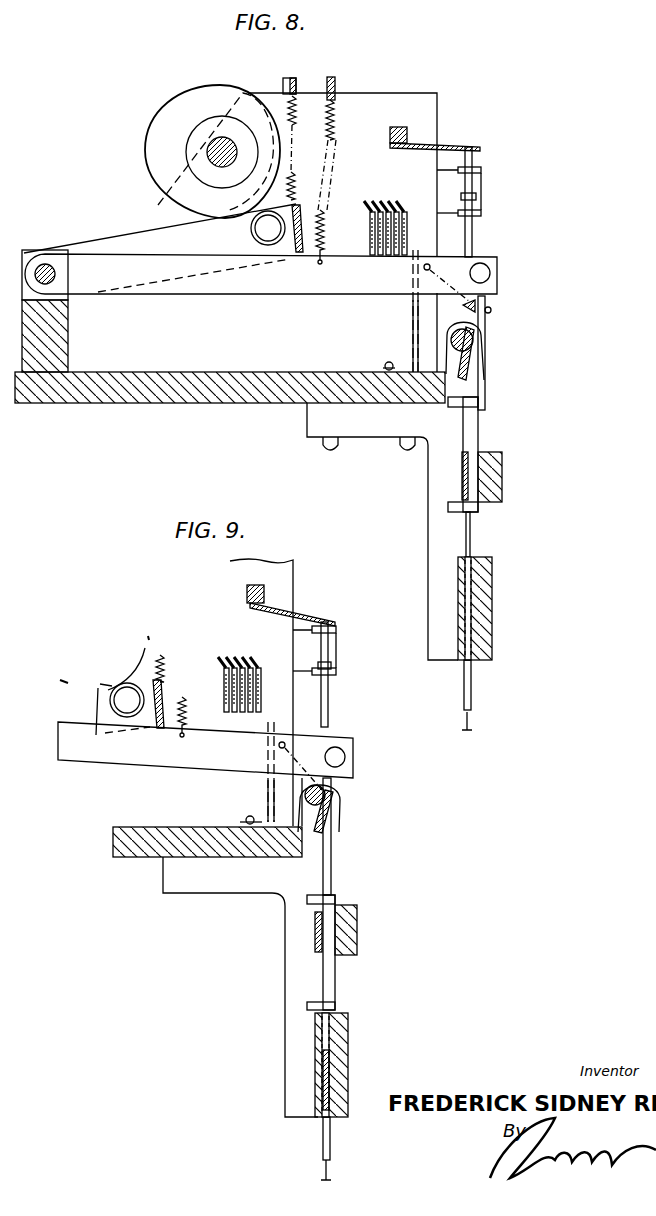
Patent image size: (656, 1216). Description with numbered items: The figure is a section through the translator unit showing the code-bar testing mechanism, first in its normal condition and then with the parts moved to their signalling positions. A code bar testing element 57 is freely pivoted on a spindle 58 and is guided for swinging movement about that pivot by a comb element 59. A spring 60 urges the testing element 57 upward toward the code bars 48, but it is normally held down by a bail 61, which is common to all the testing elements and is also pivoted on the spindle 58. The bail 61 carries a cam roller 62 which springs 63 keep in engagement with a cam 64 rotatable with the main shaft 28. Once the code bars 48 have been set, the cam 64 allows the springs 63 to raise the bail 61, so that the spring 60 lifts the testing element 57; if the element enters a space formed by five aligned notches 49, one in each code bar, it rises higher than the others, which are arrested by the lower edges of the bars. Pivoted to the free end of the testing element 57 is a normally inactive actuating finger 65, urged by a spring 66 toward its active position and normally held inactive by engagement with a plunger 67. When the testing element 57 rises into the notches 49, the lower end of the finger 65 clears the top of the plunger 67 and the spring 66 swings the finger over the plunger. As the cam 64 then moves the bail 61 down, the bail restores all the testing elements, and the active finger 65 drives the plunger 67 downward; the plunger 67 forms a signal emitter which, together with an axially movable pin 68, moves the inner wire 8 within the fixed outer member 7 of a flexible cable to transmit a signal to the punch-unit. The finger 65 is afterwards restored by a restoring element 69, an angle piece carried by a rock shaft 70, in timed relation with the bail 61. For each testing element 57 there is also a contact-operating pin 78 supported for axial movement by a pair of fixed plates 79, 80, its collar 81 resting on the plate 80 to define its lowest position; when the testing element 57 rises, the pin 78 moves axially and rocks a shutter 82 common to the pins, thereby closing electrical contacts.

In FIG. 8, the outer member 7 is at (473, 697).
In FIG. 9, the outer member 7 is at (332, 1139).
In FIG. 8, the inner wire 8 is at (472, 614).
In FIG. 9, the inner wire 8 is at (330, 1084).
In FIG. 8, the main shaft 28 is at (207, 151).
In FIG. 8, the code bars 48 is at (370, 232).
In FIG. 8, the notches 49 is at (382, 258).
In FIG. 8, the code bar testing element 57 is at (232, 290).
In FIG. 9, the code bar testing element 57 is at (90, 753).
In FIG. 8, the spindle 58 is at (46, 262).
In FIG. 8, the comb element 59 is at (413, 322).
In FIG. 9, the comb element 59 is at (268, 794).
In FIG. 8, the spring 60 is at (334, 125).
In FIG. 9, the spring 60 is at (188, 708).
In FIG. 8, the bail 61 is at (296, 258).
In FIG. 9, the bail 61 is at (158, 732).
In FIG. 8, the cam roller 62 is at (252, 231).
In FIG. 9, the cam roller 62 is at (110, 702).
In FIG. 8, the spring 63 is at (288, 112).
In FIG. 9, the spring 63 is at (165, 662).
In FIG. 8, the cam 64 is at (168, 118).
In FIG. 9, the cam 64 is at (141, 648).
In FIG. 8, the actuating finger 65 is at (486, 400).
In FIG. 9, the actuating finger 65 is at (332, 881).
In FIG. 8, the spring 66 is at (492, 311).
In FIG. 9, the spring 66 is at (347, 758).
In FIG. 8, the plunger 67 is at (480, 436).
In FIG. 9, the plunger 67 is at (336, 992).
In FIG. 8, the axially movable pin 68 is at (472, 544).
In FIG. 9, the axially movable pin 68 is at (330, 1034).
In FIG. 8, the restoring element 69 is at (468, 376).
In FIG. 9, the restoring element 69 is at (336, 832).
In FIG. 8, the rock shaft 70 is at (474, 340).
In FIG. 9, the rock shaft 70 is at (330, 798).
In FIG. 8, the contact-operating pin 78 is at (474, 245).
In FIG. 9, the contact-operating pin 78 is at (329, 720).
In FIG. 8, the fixed plate 79 is at (483, 170).
In FIG. 9, the fixed plate 79 is at (337, 630).
In FIG. 8, the fixed plate 80 is at (483, 213).
In FIG. 9, the fixed plate 80 is at (337, 675).
In FIG. 8, the collar 81 is at (478, 197).
In FIG. 9, the collar 81 is at (332, 666).
In FIG. 8, the shutter 82 is at (462, 146).
In FIG. 9, the shutter 82 is at (310, 616).